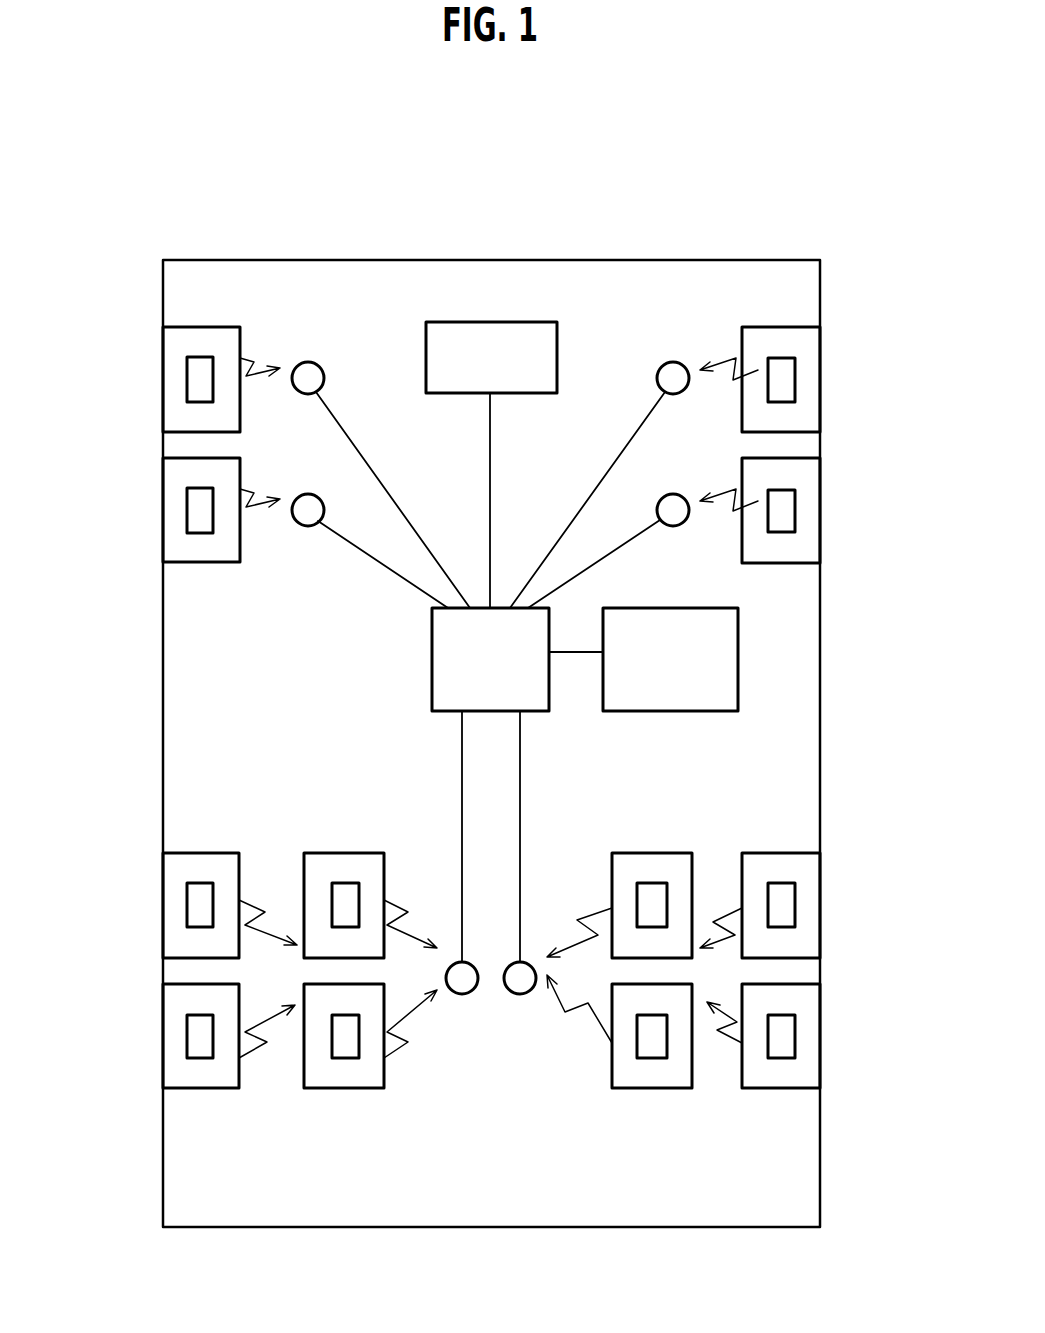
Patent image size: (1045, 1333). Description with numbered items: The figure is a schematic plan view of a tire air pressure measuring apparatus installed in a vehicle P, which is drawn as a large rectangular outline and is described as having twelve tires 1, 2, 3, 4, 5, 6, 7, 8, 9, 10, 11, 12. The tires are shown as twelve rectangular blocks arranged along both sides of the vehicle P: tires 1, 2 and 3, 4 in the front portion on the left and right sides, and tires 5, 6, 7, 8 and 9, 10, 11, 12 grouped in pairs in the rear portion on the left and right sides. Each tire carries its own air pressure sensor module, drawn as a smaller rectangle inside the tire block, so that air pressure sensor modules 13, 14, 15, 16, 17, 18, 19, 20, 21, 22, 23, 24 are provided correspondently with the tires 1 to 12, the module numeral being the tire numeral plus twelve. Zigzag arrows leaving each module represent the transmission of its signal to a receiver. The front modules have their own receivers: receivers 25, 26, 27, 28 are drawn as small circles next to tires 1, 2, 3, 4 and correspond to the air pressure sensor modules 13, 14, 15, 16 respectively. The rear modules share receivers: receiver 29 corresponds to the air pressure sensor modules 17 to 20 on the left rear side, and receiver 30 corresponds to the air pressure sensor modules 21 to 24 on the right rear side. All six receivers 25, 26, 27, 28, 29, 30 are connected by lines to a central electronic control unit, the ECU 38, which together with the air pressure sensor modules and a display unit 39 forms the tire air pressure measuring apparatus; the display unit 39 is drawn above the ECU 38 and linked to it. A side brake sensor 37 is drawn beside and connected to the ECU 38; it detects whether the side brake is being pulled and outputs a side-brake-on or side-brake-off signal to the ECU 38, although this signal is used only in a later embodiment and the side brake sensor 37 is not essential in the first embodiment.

The vehicle P is at (586, 260).
The tire 1 is at (173, 345).
The tire 2 is at (173, 475).
The tire 3 is at (807, 345).
The tire 4 is at (807, 477).
The tire 5 is at (173, 867).
The tire 6 is at (327, 863).
The tire 7 is at (173, 997).
The tire 8 is at (357, 1070).
The tire 9 is at (662, 858).
The tire 10 is at (807, 870).
The tire 11 is at (680, 1068).
The tire 12 is at (807, 998).
The air pressure sensor module 13 is at (200, 382).
The air pressure sensor module 14 is at (200, 512).
The air pressure sensor module 15 is at (783, 383).
The air pressure sensor module 16 is at (783, 513).
The air pressure sensor module 17 is at (200, 913).
The air pressure sensor module 18 is at (345, 905).
The air pressure sensor module 19 is at (200, 1038).
The air pressure sensor module 20 is at (345, 1033).
The air pressure sensor module 21 is at (653, 900).
The air pressure sensor module 22 is at (783, 908).
The air pressure sensor module 23 is at (650, 1040).
The air pressure sensor module 24 is at (783, 1036).
The receiver 25 is at (308, 362).
The receiver 26 is at (308, 494).
The receiver 27 is at (673, 362).
The receiver 28 is at (673, 494).
The receiver 29 is at (462, 994).
The receiver 30 is at (520, 994).
The side brake sensor 37 is at (738, 661).
The electronic control unit (ECU) 38 is at (497, 608).
The display unit 39 is at (495, 322).